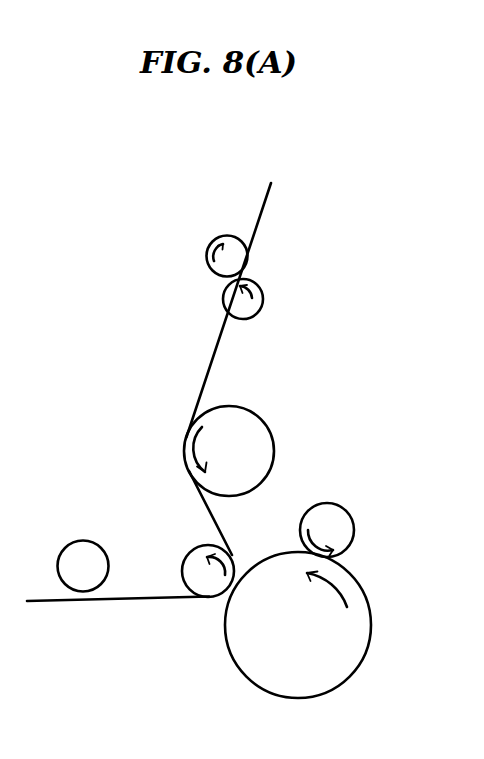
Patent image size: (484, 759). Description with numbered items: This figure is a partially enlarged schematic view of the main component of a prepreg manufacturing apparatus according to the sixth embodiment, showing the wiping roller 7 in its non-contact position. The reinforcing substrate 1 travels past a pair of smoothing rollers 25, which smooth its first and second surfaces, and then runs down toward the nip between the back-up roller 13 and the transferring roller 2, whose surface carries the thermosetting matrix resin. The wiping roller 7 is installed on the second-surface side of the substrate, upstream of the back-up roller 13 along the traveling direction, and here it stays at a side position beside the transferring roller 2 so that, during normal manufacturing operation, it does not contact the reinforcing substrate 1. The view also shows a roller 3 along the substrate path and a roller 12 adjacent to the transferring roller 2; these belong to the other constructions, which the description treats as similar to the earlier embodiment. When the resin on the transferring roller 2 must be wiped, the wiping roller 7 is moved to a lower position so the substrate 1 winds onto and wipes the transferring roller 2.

The reinforcing substrate 1 is at (131, 601).
The transferring roller 2 is at (342, 683).
The roller 3 is at (260, 420).
The wiping roller 7 is at (81, 540).
The roller 12 is at (347, 513).
The back-up roller 13 is at (189, 552).
The smoothing roller 25 is at (231, 258).